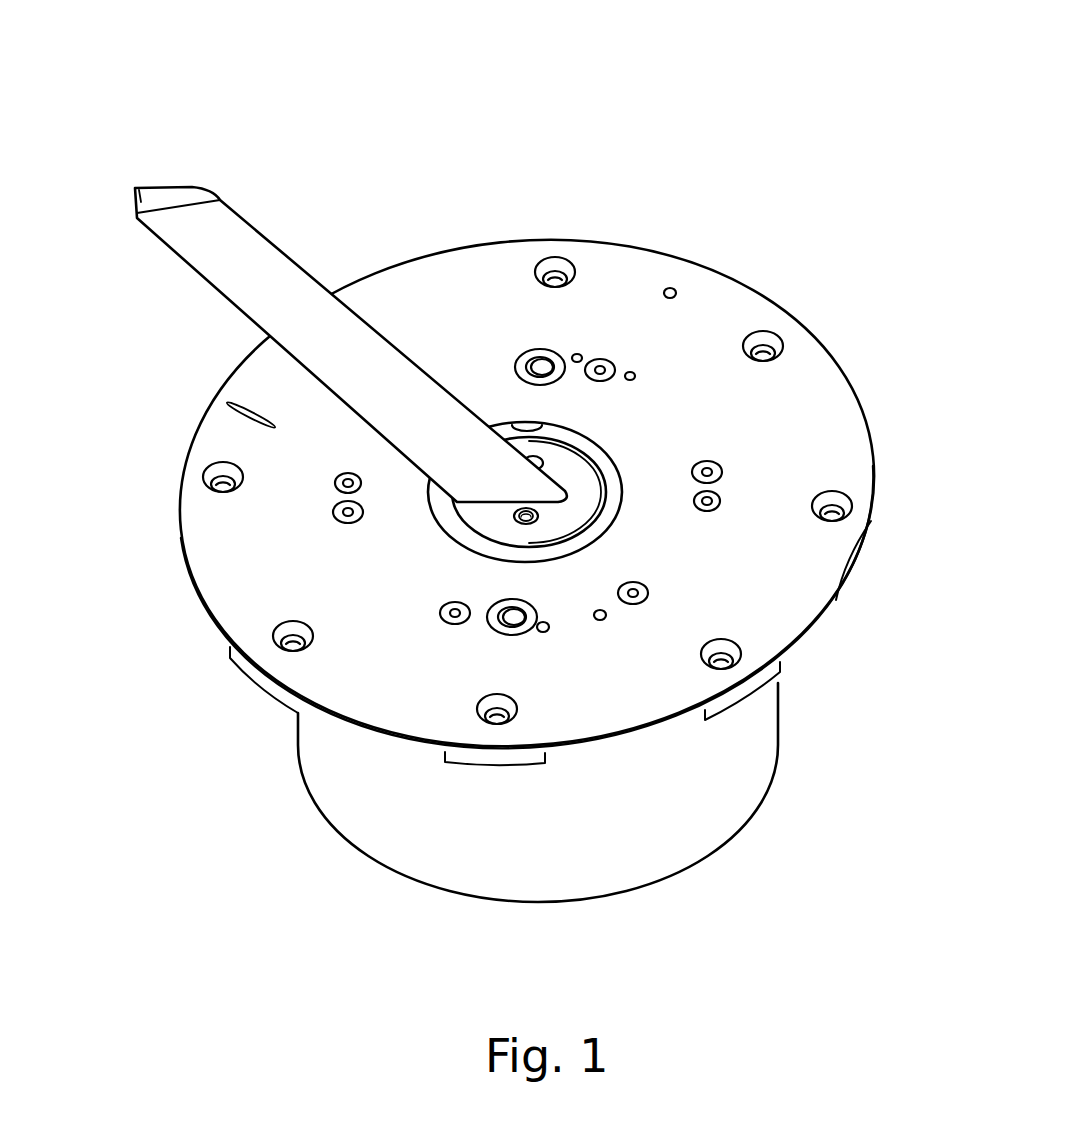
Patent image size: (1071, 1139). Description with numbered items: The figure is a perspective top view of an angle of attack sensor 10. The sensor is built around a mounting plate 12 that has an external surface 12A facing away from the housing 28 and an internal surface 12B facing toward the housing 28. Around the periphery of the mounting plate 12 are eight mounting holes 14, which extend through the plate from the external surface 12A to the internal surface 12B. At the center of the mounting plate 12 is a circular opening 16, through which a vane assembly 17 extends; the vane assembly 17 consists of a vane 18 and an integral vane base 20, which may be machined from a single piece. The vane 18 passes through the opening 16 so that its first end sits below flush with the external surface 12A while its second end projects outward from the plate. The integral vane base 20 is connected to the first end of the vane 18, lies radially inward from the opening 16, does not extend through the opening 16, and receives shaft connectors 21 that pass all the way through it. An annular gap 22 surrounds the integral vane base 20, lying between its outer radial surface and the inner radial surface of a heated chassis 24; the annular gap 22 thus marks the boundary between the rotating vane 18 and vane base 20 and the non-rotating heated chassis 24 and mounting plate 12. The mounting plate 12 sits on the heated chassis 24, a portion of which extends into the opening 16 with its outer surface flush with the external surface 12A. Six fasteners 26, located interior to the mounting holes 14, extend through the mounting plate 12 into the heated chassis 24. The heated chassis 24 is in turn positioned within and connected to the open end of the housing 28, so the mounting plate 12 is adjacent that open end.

The angle of attack sensor 10 is at (118, 74).
The mounting plate 12 is at (821, 404).
The external surface 12A is at (784, 555).
The internal surface 12B is at (810, 647).
The mounting holes 14 is at (767, 345).
The opening 16 is at (513, 425).
The vane assembly 17 is at (330, 442).
The vane 18 is at (212, 247).
The integral vane base 20 is at (483, 507).
The shaft connectors 21 is at (540, 519).
The annular gap 22 is at (607, 467).
The heated chassis 24 is at (587, 452).
The fasteners 26 is at (714, 472).
The housing 28 is at (598, 860).